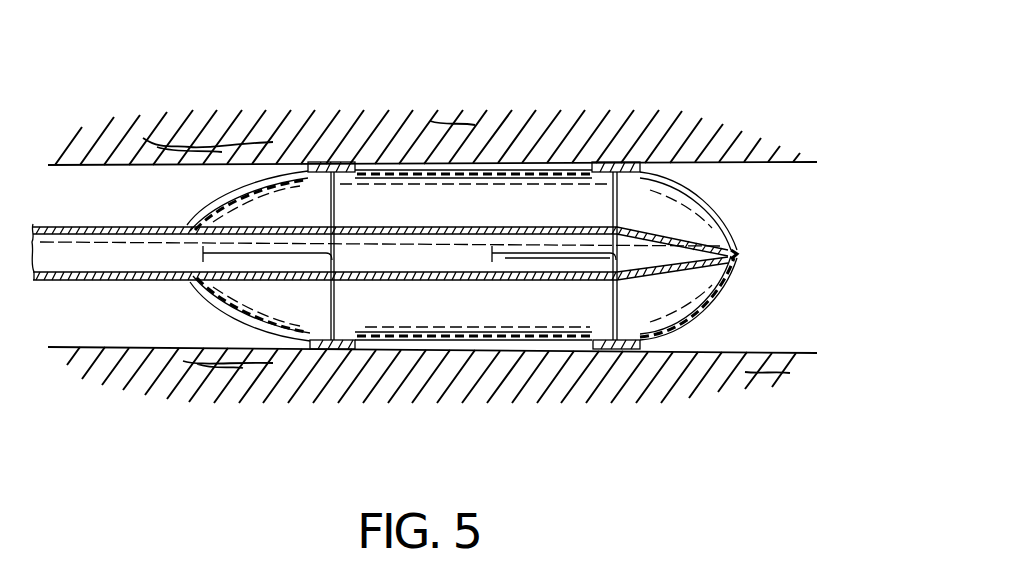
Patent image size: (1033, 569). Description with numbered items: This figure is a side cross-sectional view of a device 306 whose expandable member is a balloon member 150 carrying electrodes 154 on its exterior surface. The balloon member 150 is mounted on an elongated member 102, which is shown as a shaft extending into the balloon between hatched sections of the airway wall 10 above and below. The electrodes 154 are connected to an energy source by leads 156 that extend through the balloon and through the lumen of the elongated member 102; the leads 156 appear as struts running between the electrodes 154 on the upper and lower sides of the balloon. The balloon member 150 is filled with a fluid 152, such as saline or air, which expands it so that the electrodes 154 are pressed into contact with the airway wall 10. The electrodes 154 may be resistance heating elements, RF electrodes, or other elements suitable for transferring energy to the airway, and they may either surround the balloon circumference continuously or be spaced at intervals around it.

The airway wall 10 is at (766, 372).
The elongated member 102 is at (137, 283).
The balloon member 150 is at (425, 352).
The fluid 152 is at (522, 312).
The electrodes 154 is at (342, 163).
The leads 156 is at (289, 250).
The device 306 is at (735, 207).